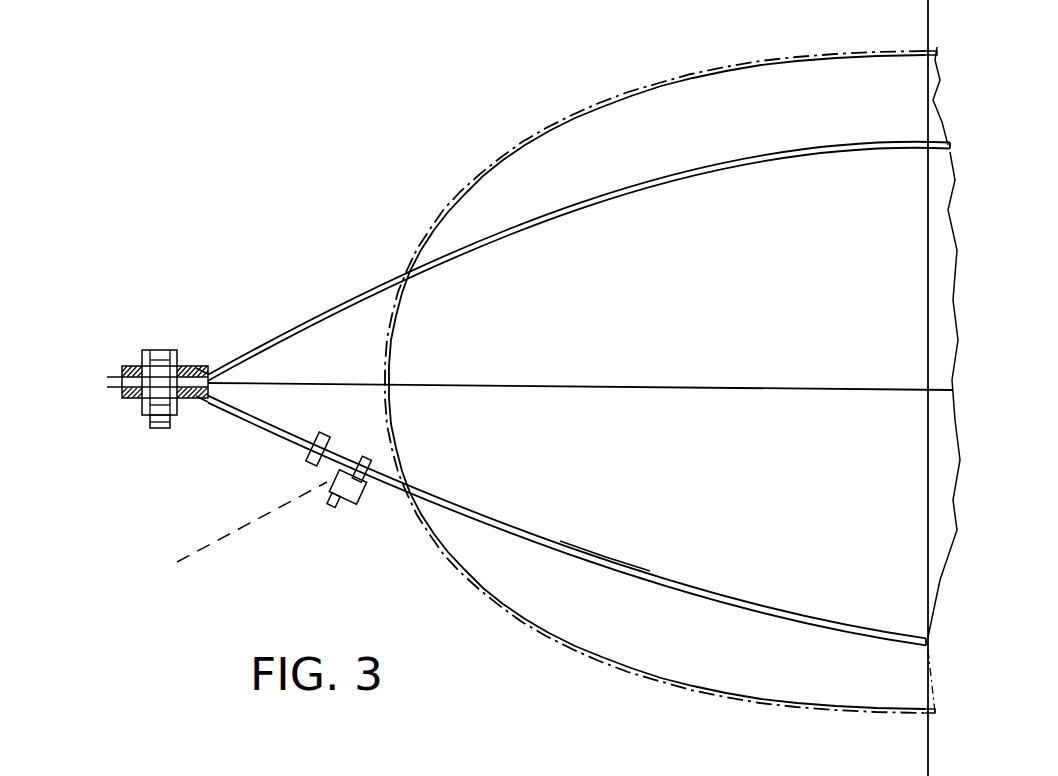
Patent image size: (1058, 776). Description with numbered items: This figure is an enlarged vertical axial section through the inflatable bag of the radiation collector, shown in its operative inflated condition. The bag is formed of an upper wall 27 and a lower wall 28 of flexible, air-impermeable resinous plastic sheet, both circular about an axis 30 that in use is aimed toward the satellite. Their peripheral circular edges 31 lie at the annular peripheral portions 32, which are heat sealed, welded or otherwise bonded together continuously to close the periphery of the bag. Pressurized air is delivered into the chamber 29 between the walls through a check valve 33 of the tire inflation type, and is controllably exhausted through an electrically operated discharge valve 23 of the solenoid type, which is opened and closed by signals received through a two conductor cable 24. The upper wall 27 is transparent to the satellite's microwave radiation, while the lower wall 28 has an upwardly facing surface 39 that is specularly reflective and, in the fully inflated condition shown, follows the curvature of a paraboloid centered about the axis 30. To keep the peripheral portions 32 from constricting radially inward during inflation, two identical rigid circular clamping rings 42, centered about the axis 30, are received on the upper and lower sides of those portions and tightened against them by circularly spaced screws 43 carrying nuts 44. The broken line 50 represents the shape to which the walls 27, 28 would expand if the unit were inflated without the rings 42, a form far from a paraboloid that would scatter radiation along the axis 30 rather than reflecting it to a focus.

The discharge valve 23 is at (370, 497).
The two conductor cable 24 is at (233, 528).
The upper wall 27 is at (785, 157).
The lower wall 28 is at (717, 603).
The chamber 29 is at (580, 417).
The axis 30 is at (928, 290).
The peripheral circular edges 31 is at (108, 378).
The annular peripheral portions 32 is at (188, 370).
The check valve 33 is at (306, 452).
The upwardly facing surface 39 is at (622, 567).
The clamping rings 42 is at (131, 366).
The screws 43 is at (160, 351).
The nuts 44 is at (150, 420).
The broken line 50 is at (557, 127).